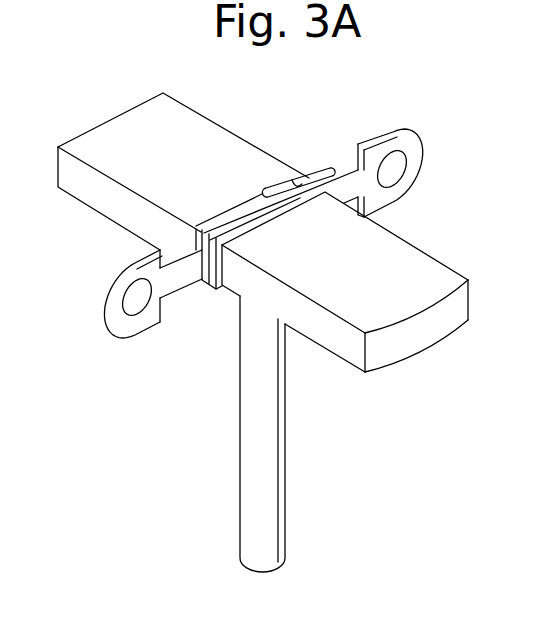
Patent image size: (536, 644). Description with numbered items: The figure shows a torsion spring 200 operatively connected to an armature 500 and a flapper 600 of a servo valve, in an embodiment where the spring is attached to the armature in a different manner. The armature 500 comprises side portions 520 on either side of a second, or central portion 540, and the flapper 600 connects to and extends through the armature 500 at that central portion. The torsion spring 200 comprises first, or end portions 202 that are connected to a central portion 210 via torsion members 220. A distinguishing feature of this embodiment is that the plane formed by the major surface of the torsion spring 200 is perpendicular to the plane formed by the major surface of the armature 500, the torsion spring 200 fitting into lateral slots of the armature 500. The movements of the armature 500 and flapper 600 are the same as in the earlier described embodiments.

The torsion spring 200 is at (395, 128).
The end portions 202 is at (123, 333).
The central portion 210 is at (212, 292).
The torsion members 220 is at (174, 283).
The armature 500 is at (405, 262).
The side portions 520 is at (112, 122).
The central portion 540 is at (308, 173).
The flapper 600 is at (253, 493).